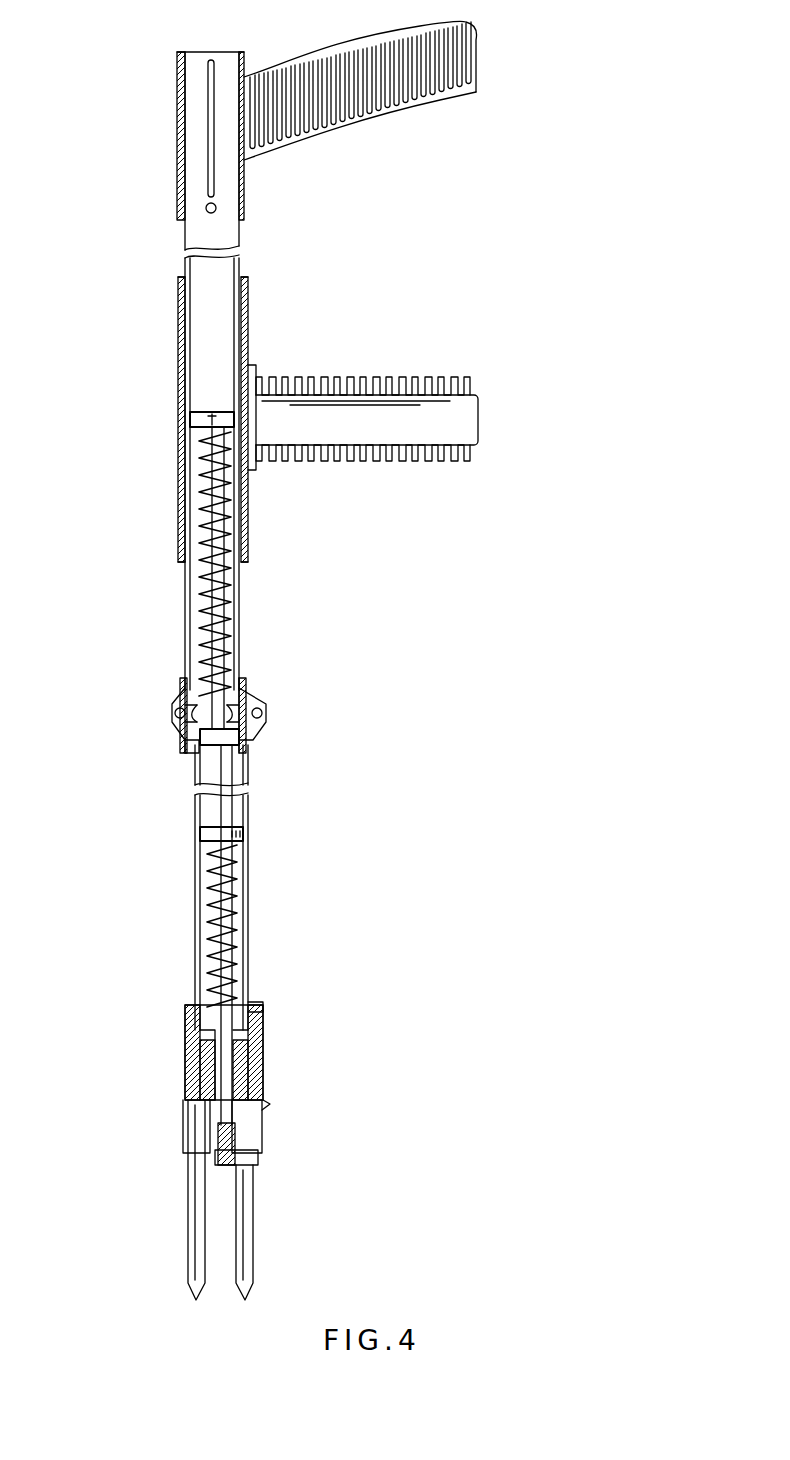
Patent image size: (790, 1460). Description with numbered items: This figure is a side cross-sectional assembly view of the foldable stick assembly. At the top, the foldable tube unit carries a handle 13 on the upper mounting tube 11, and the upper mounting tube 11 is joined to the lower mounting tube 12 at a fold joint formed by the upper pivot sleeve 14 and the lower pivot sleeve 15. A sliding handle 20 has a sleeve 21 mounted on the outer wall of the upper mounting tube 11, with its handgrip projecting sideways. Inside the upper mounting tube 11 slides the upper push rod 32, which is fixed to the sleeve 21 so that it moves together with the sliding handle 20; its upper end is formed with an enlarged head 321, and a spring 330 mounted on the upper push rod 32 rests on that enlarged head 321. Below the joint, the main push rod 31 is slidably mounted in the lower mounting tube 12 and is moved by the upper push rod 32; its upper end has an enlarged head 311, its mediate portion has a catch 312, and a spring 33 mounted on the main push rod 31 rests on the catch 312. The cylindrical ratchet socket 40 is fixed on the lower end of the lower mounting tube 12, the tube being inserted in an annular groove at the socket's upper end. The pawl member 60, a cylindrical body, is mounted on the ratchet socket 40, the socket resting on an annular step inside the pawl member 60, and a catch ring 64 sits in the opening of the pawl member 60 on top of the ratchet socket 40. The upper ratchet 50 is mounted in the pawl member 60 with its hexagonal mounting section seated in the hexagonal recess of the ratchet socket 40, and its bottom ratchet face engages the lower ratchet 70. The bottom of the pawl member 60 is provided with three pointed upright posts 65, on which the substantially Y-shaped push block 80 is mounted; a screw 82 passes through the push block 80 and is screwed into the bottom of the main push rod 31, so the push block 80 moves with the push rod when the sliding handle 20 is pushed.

The upper mounting tube 11 is at (192, 588).
The lower mounting tube 12 is at (248, 935).
The handle 13 is at (330, 125).
The upper pivot sleeve 14 is at (250, 685).
The lower pivot sleeve 15 is at (183, 748).
The sliding handle 20 is at (405, 373).
The sleeve 21 is at (180, 475).
The main push rod 31 is at (215, 975).
The upper push rod 32 is at (215, 633).
The spring 33 is at (237, 890).
The ratchet socket 40 is at (263, 1043).
The upper ratchet 50 is at (185, 1085).
The pawl member 60 is at (263, 1085).
The catch ring 64 is at (255, 1000).
The upright posts 65 is at (205, 1280).
The lower ratchet 70 is at (257, 1107).
The push block 80 is at (258, 1160).
The screw 82 is at (225, 1165).
The enlarged head 311 is at (238, 748).
The catch 312 is at (197, 830).
The enlarged head 321 is at (200, 413).
The spring 330 is at (228, 598).